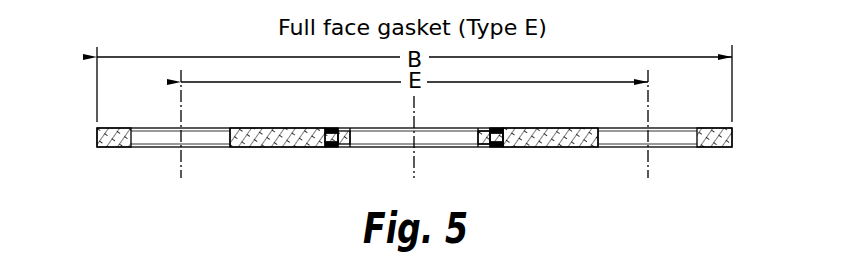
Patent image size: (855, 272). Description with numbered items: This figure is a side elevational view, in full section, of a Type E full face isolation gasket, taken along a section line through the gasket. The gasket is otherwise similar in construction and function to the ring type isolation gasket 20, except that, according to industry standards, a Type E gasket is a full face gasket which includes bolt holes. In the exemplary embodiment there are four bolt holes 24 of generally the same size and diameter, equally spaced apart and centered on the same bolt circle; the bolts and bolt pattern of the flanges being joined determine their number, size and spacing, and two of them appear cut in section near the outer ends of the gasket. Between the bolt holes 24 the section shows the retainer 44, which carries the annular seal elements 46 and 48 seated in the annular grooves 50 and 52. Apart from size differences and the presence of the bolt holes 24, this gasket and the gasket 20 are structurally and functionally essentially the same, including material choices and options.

The isolation gasket 20 is at (75, 115).
The bolt holes 24 is at (143, 141).
The retainer 44 is at (268, 146).
The annular seal element 46 is at (497, 128).
The annular seal element 48 is at (497, 148).
The annular groove 50 is at (484, 128).
The annular groove 52 is at (484, 148).